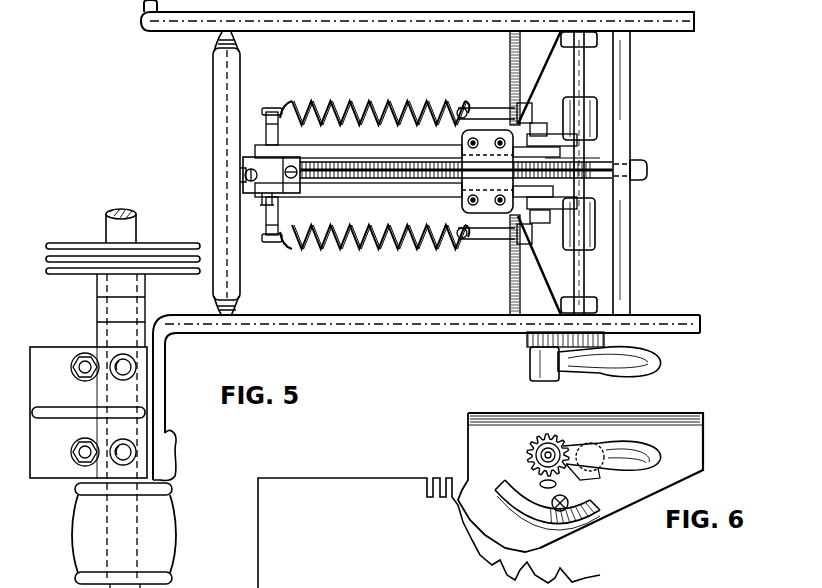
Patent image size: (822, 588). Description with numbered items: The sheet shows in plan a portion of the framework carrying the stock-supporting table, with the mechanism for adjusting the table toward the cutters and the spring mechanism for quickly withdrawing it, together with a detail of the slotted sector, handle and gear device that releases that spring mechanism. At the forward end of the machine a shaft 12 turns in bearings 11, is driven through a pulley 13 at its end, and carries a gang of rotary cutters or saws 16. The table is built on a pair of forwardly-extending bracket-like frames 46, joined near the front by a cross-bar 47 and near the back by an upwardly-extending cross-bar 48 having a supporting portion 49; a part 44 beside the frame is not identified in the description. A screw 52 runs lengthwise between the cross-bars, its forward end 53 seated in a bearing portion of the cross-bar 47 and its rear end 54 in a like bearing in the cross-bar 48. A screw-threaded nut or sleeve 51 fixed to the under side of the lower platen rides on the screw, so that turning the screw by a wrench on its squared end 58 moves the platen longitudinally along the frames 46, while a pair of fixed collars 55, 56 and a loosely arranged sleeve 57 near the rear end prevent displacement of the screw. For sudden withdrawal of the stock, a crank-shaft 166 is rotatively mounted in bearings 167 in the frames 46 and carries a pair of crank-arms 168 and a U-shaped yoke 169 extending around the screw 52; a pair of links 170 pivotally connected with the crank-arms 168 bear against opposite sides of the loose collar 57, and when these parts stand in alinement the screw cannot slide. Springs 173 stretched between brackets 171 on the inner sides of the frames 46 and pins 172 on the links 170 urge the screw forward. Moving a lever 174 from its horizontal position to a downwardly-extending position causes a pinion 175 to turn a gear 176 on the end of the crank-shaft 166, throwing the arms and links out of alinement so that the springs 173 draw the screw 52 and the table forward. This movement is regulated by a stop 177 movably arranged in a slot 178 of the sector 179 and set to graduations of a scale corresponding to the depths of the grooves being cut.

In FIG. 5, the bearings 11 is at (88, 412).
In FIG. 5, the shaft 12 is at (128, 228).
In FIG. 5, the pulley 13 is at (86, 516).
In FIG. 5, the rotary cutters or saws 16 is at (72, 242).
In FIG. 5, the bracket 44 is at (170, 452).
In FIG. 5, the bracket-like frames 46 is at (327, 33).
In FIG. 6, the bracket-like frames 46 is at (690, 459).
In FIG. 5, the cross-bar 47 is at (624, 102).
In FIG. 5, the upwardly-extending cross-bar 48 is at (211, 46).
In FIG. 5, the supporting portion 49 is at (240, 78).
In FIG. 5, the screw-threaded nut or sleeve 51 is at (487, 171).
In FIG. 5, the screw 52 is at (588, 161).
In FIG. 5, the forward end of screw 53 is at (580, 183).
In FIG. 5, the rear end of screw 54 is at (240, 175).
In FIG. 5, the fixed collar 55 is at (243, 158).
In FIG. 5, the fixed collar 56 is at (292, 189).
In FIG. 5, the sleeve or loose collar 57 is at (246, 193).
In FIG. 5, the squared end 58 is at (648, 170).
In FIG. 5, the crank-shaft 166 is at (574, 70).
In FIG. 5, the bearings 167 is at (593, 47).
In FIG. 5, the crank-arms 168 is at (560, 138).
In FIG. 5, the U-shaped connection or yoke 169 is at (547, 158).
In FIG. 5, the links 170 is at (407, 129).
In FIG. 5, the brackets 171 is at (511, 63).
In FIG. 5, the pins 172 is at (269, 109).
In FIG. 5, the springs 173 is at (377, 106).
In FIG. 5, the lever 174 is at (600, 362).
In FIG. 6, the lever 174 is at (636, 444).
In FIG. 5, the pinion 175 is at (526, 340).
In FIG. 6, the pinion 175 is at (527, 428).
In FIG. 5, the gear 176 is at (652, 340).
In FIG. 6, the gear 176 is at (593, 434).
In FIG. 6, the stop 177 is at (566, 524).
In FIG. 6, the slot 178 is at (526, 494).
In FIG. 6, the sector 179 is at (590, 483).